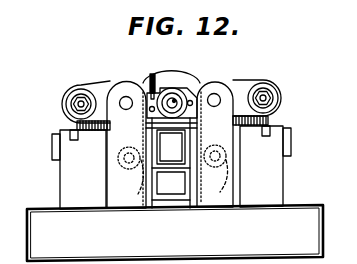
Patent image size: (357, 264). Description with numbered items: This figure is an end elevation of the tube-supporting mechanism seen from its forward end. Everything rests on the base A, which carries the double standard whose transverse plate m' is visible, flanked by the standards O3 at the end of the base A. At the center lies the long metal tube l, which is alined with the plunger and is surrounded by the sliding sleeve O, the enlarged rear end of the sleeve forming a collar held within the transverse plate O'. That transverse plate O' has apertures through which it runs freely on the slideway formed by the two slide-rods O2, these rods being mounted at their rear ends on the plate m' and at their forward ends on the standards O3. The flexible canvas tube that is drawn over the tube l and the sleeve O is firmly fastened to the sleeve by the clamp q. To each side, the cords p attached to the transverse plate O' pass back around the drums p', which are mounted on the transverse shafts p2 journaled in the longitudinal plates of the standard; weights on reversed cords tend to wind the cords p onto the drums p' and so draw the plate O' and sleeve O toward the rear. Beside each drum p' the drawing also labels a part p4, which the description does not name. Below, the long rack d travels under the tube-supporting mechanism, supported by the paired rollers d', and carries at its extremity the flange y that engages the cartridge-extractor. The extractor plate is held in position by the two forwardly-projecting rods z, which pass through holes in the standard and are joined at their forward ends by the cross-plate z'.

The base A is at (175, 233).
The transverse plate m' is at (171, 167).
The rack d is at (129, 145).
The paired rollers d' is at (211, 144).
The sliding sleeve O is at (172, 96).
The transverse plate O' is at (171, 66).
The slide-rods O2 is at (173, 120).
The standards O3 is at (126, 96).
The metal tube l is at (183, 103).
The clamp q is at (151, 86).
The flange y is at (171, 147).
The forwardly-projecting rods z is at (172, 150).
The cross-plate z' is at (171, 183).
The cords p is at (177, 101).
The drums p' is at (173, 140).
The transverse shafts p2 is at (52, 146).
The ratchet rack p4 is at (105, 131).